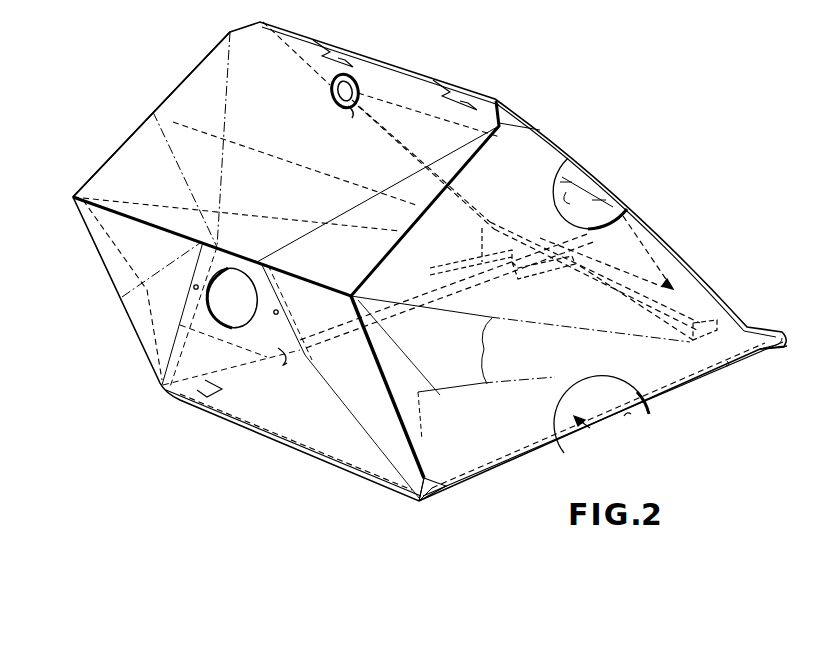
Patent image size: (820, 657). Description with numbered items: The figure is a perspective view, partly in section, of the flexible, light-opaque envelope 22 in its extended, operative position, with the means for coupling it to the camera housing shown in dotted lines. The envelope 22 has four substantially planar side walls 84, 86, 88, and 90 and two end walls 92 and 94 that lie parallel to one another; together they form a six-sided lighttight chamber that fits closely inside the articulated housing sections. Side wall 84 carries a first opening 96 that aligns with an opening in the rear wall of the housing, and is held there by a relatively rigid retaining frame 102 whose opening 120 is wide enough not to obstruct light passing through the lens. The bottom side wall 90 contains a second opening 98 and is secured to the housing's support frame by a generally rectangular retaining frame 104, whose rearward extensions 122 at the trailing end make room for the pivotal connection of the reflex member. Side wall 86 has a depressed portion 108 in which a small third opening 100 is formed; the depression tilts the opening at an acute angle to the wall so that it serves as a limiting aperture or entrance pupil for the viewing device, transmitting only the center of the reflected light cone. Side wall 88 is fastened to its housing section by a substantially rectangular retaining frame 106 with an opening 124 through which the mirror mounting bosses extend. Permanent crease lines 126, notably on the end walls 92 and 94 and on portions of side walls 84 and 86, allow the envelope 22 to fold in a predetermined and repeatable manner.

The envelope 22 is at (122, 90).
The side wall 84 is at (112, 240).
The side wall 86 is at (122, 185).
The side wall 88 is at (377, 58).
The side wall 90 is at (500, 479).
The end wall 92 is at (455, 462).
The end wall 94 is at (180, 82).
The first opening 96 is at (217, 313).
The second opening 98 is at (583, 444).
The third opening 100 is at (331, 92).
The attachment plate (retaining frame) 102 is at (287, 364).
The attachment plate (retaining frame) 104 is at (628, 417).
The attachment plate (retaining frame) 106 is at (618, 210).
The depressed portion 108 is at (355, 115).
The opening 120 is at (231, 297).
The rearward extensions 122 is at (508, 250).
The opening 124 is at (582, 203).
The permanent crease lines 126 is at (483, 349).